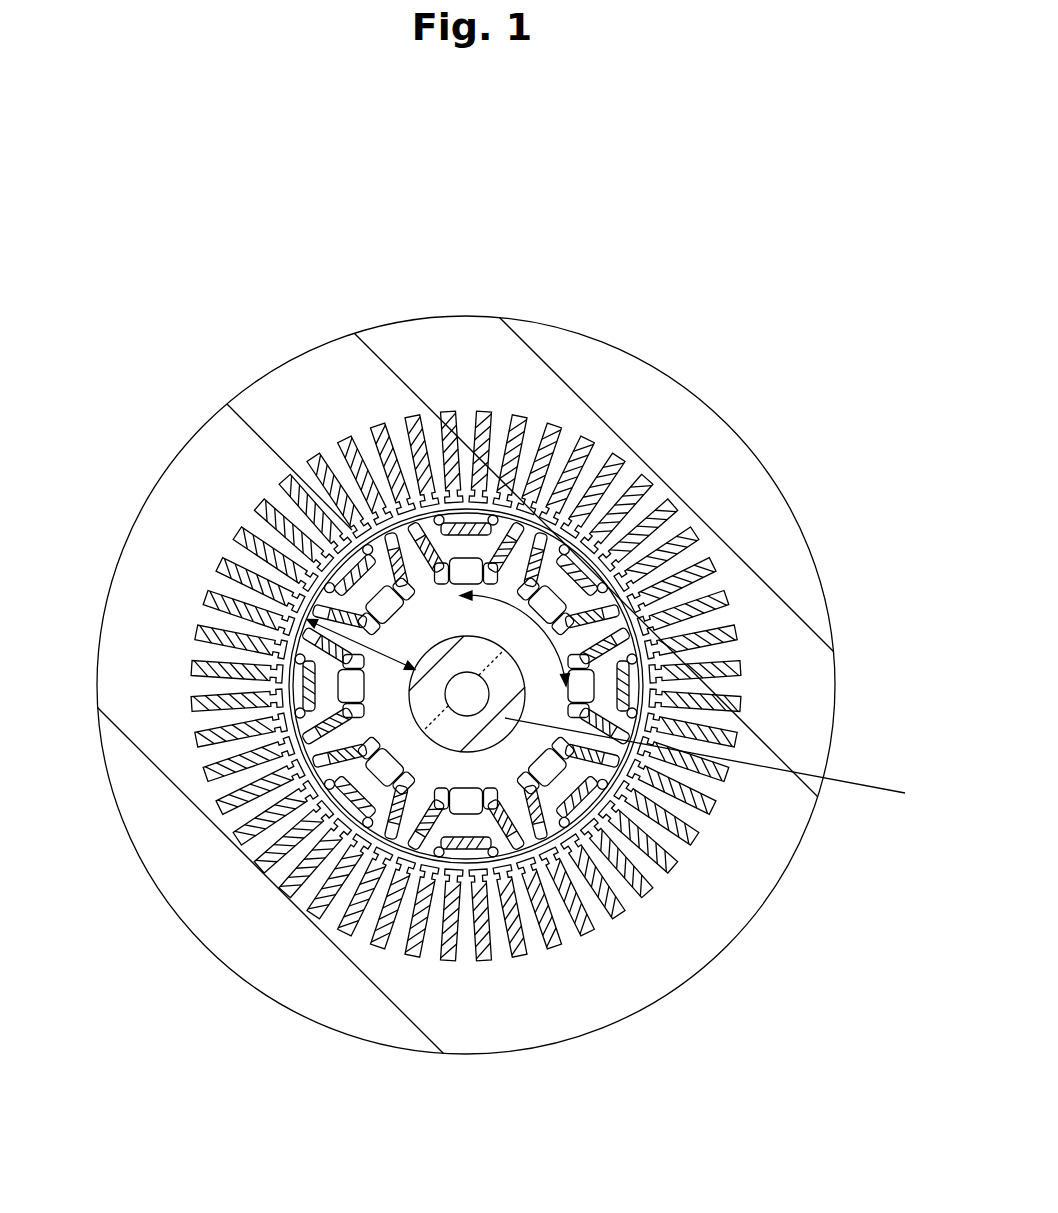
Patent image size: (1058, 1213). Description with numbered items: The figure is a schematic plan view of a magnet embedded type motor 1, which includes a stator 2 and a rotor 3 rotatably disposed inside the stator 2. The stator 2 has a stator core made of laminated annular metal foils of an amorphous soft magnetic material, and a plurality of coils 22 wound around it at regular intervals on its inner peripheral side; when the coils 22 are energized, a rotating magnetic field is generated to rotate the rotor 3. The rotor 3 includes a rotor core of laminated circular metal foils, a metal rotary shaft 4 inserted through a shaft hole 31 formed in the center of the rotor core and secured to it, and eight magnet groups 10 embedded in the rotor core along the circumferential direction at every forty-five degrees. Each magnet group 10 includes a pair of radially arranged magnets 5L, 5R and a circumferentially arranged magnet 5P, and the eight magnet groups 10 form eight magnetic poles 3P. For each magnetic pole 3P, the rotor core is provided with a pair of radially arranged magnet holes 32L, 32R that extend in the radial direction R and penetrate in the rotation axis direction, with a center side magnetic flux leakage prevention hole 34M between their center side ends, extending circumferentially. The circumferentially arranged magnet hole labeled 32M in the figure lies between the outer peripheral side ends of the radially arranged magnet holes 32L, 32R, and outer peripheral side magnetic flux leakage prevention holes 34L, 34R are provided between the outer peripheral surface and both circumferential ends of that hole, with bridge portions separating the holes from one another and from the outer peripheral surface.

The magnet embedded type motor 1 is at (831, 238).
The stator 2 is at (229, 392).
The coil 22 is at (245, 513).
The rotor 3 is at (608, 817).
The magnetic pole 3P is at (603, 554).
The shaft hole 31 is at (462, 745).
The rotary shaft 4 is at (640, 787).
The magnet group 10 is at (377, 274).
The radially arranged magnet 5L is at (437, 515).
The circumferentially arranged magnet 5P is at (468, 521).
The radially arranged magnet 5R is at (498, 516).
The radially arranged magnet hole 32L is at (621, 636).
The outer peripheral side magnetic flux leakage prevention hole 34L is at (610, 658).
The middle magnet slot 32M is at (623, 690).
The center side magnetic flux leakage prevention hole 34M is at (583, 687).
The radially arranged magnet hole 32R is at (621, 736).
The outer peripheral side magnetic flux leakage prevention hole 34R is at (610, 714).
The radial direction R is at (361, 645).